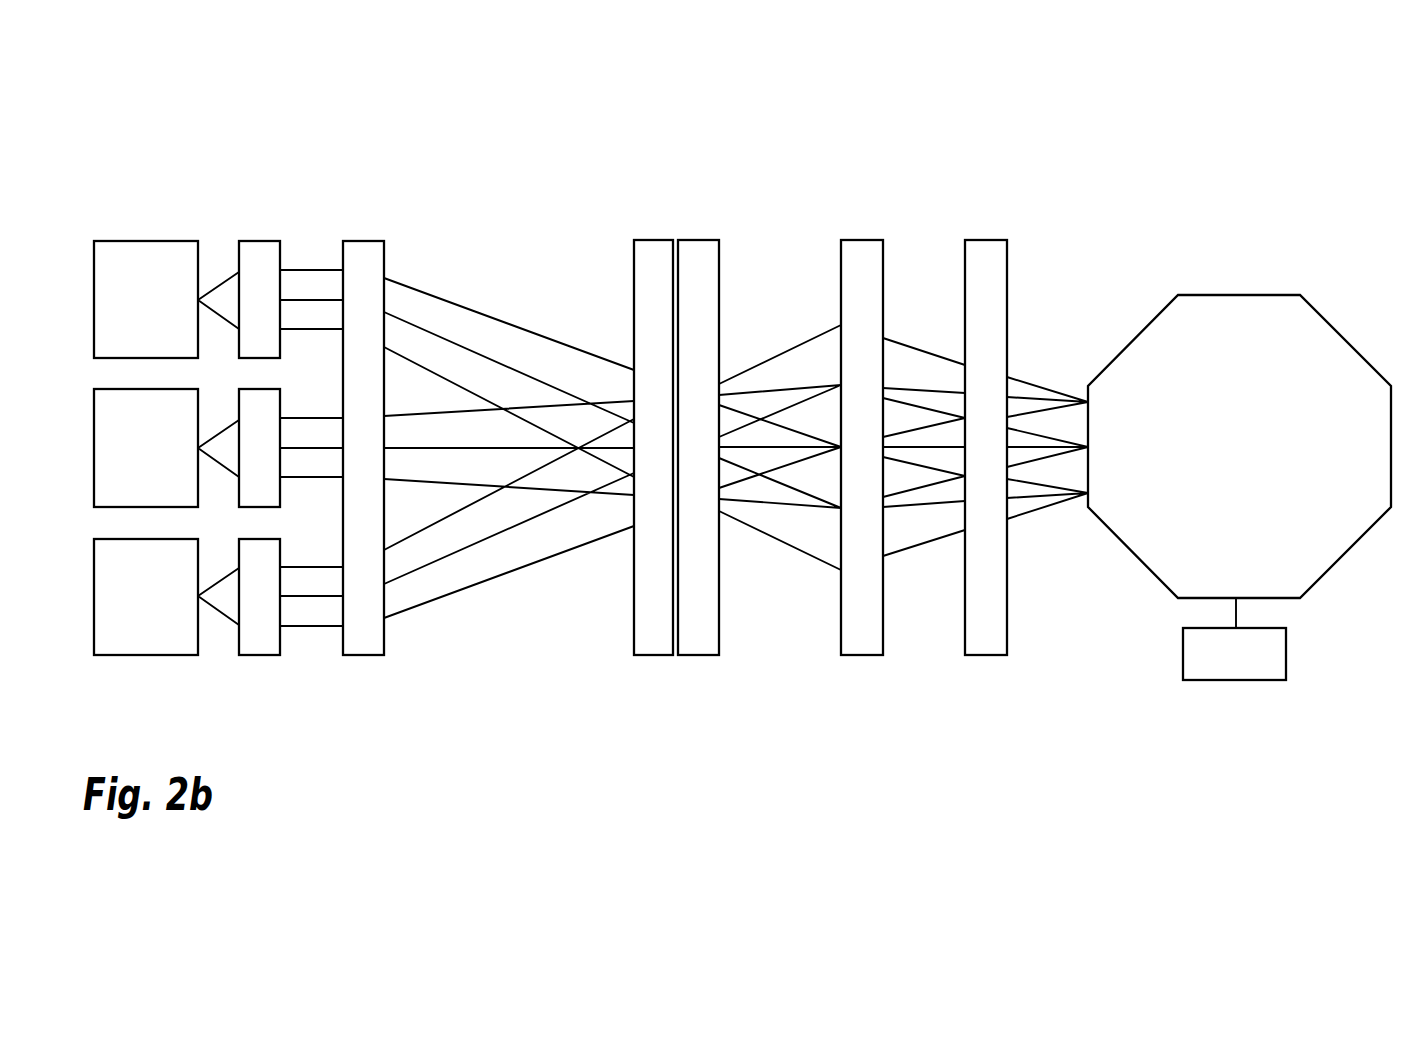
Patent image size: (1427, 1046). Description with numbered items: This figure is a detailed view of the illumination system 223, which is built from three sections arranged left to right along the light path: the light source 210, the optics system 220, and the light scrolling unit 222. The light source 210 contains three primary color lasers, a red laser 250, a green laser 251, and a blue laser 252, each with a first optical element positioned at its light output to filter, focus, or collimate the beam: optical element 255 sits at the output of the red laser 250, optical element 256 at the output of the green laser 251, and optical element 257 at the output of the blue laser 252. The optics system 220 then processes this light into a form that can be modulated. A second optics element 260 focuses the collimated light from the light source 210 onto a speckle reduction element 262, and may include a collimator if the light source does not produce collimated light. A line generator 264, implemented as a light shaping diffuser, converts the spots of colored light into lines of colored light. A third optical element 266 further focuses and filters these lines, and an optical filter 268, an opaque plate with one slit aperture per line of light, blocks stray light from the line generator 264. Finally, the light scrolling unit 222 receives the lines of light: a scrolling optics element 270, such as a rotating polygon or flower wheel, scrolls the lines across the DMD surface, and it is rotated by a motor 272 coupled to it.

The illumination system 223 is at (313, 66).
The light source 210 is at (285, 207).
The optics system 220 is at (1011, 207).
The light scrolling unit 222 is at (1392, 207).
The red laser 250 is at (112, 239).
The green laser 251 is at (112, 388).
The blue laser 252 is at (112, 538).
The optical element 255 is at (258, 239).
The optical element 256 is at (258, 388).
The optical element 257 is at (258, 538).
The second optics element 260 is at (365, 239).
The speckle reduction element 262 is at (646, 239).
The line generator 264 is at (697, 239).
The third optical element 266 is at (863, 239).
The optical filter 268 is at (985, 239).
The scrolling optics element 270 is at (1323, 317).
The motor 272 is at (1257, 627).